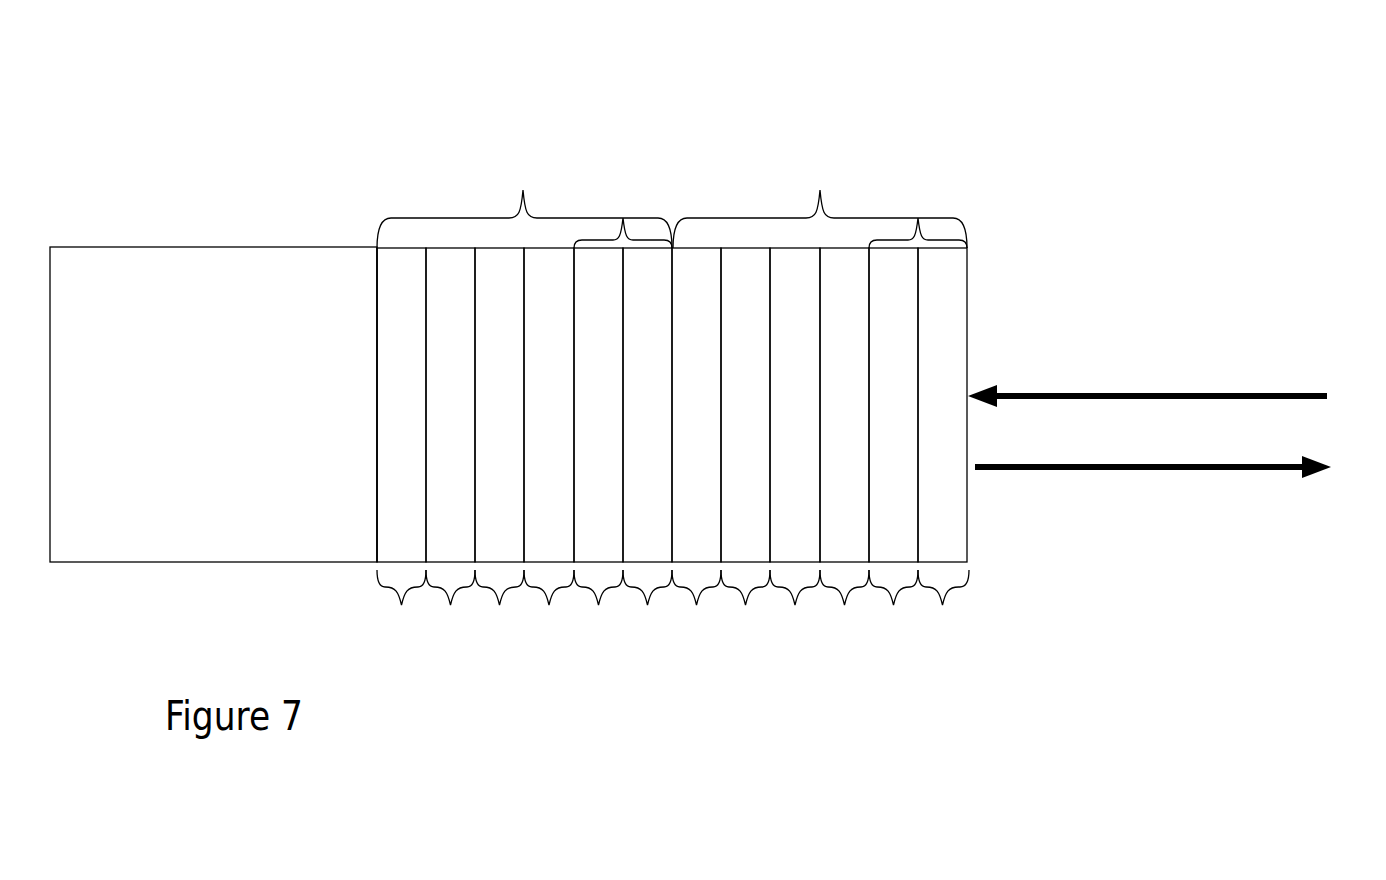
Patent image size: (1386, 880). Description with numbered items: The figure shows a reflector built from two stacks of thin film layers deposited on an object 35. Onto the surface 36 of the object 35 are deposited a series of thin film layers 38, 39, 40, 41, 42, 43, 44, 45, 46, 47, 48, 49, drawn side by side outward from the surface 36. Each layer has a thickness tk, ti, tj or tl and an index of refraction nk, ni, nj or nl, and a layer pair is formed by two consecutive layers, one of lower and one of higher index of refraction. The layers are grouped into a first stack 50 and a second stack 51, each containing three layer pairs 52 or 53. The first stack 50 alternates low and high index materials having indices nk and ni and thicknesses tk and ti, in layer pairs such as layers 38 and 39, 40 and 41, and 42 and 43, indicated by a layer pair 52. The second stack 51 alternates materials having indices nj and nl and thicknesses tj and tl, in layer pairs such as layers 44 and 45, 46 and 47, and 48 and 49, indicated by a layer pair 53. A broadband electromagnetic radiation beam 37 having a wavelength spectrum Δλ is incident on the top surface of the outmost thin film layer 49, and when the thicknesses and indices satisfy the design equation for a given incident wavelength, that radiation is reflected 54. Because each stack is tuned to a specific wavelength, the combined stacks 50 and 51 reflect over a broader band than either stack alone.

The object 35 is at (188, 318).
The surface 36 is at (341, 248).
The broadband electromagnetic radiation beam 37 is at (1147, 376).
The thin film layer 38 is at (390, 497).
The thin film layer 39 is at (462, 519).
The thin film layer 40 is at (488, 497).
The thin film layer 41 is at (538, 519).
The thin film layer 42 is at (610, 497).
The thin film layer 43 is at (636, 519).
The thin film layer 44 is at (708, 497).
The thin film layer 45 is at (734, 519).
The thin film layer 46 is at (784, 497).
The thin film layer 47 is at (856, 519).
The thin film layer 48 is at (882, 497).
The outmost thin film layer 49 is at (954, 519).
The first stack 50 is at (523, 190).
The second stack 51 is at (820, 190).
The layer pair 52 is at (623, 218).
The layer pair 53 is at (918, 218).
The reflected radiation 54 is at (1153, 493).